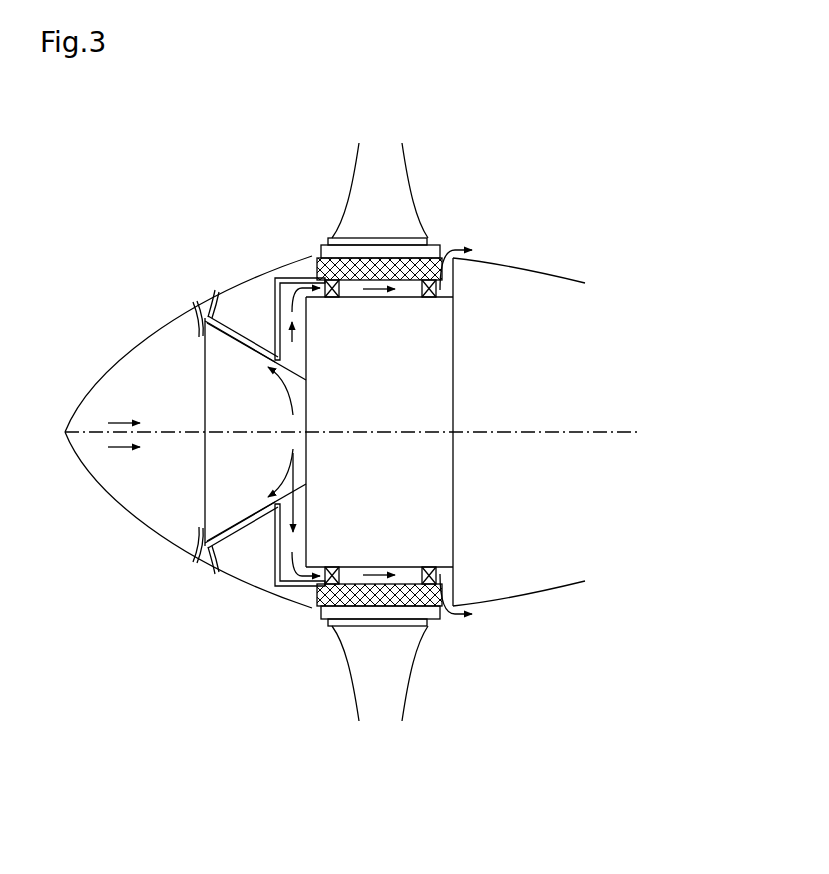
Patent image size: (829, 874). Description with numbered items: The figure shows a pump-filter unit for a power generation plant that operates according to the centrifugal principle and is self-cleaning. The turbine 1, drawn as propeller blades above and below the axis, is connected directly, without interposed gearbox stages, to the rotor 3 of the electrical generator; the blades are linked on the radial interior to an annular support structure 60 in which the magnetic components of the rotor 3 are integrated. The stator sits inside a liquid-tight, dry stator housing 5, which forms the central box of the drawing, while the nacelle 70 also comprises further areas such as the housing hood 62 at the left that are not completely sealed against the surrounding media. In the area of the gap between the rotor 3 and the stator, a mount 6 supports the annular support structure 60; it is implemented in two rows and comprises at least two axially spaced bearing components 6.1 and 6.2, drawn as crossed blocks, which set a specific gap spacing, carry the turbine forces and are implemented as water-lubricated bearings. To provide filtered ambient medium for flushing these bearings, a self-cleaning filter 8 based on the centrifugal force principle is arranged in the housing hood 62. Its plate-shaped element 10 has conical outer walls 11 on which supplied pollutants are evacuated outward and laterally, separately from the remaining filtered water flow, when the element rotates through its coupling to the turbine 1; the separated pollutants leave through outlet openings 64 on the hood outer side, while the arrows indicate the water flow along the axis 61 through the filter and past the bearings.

The turbine 1 is at (395, 182).
The rotor 3 is at (462, 262).
The stator housing 5 is at (455, 327).
The mount 6 is at (330, 565).
The bearing component 6.1 is at (332, 297).
The bearing component 6.2 is at (428, 297).
The self-cleaning filter 8 is at (205, 403).
The plate-shaped element 10 is at (254, 399).
The conical outer walls 11 is at (237, 523).
The annular support structure 60 is at (433, 247).
The axis of rotation 61 is at (562, 432).
The housing hood 62 is at (187, 365).
The outlet openings 64 is at (205, 305).
The nacelle 70 is at (541, 375).